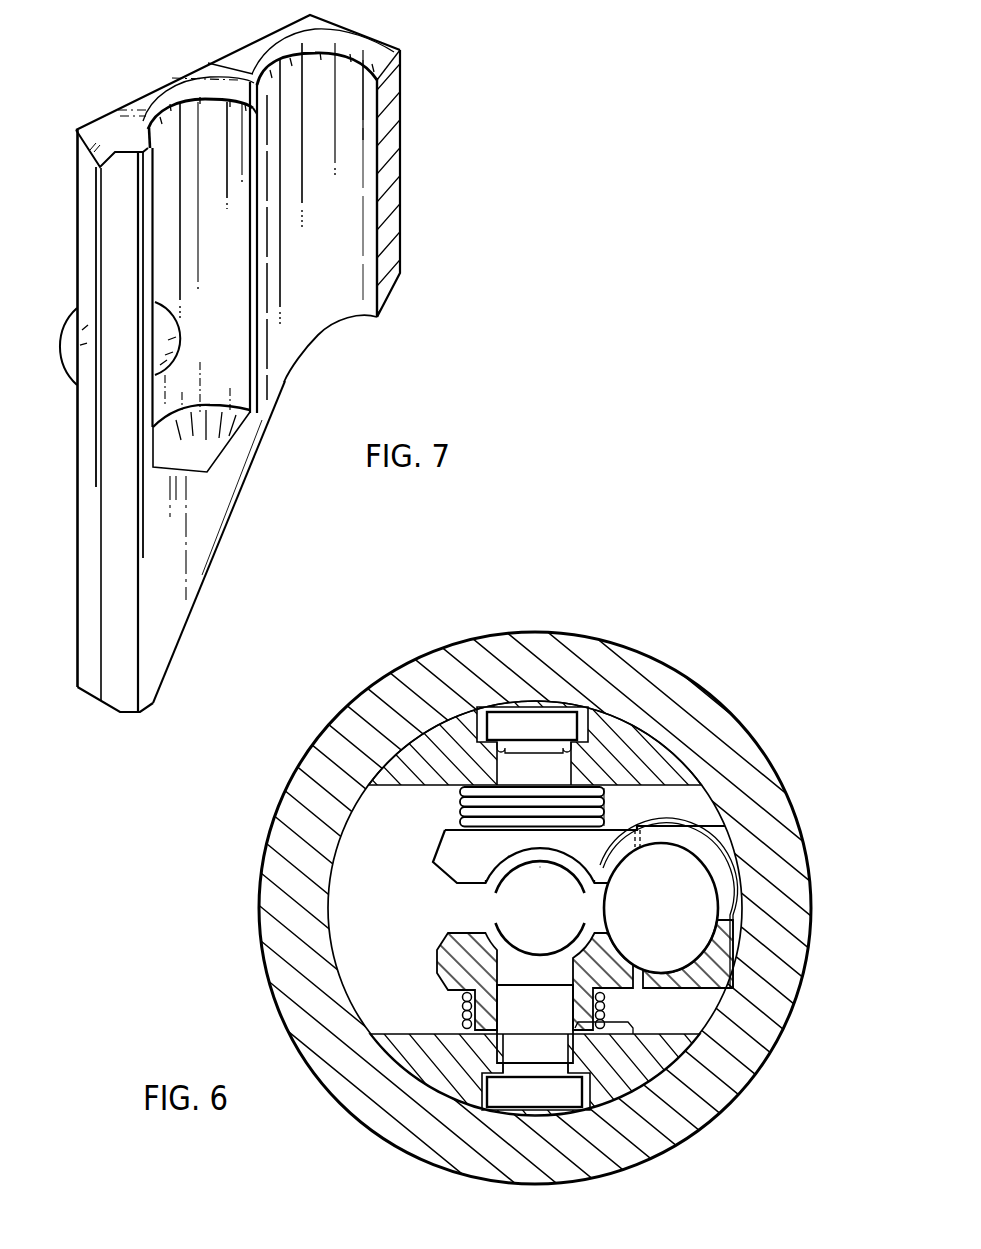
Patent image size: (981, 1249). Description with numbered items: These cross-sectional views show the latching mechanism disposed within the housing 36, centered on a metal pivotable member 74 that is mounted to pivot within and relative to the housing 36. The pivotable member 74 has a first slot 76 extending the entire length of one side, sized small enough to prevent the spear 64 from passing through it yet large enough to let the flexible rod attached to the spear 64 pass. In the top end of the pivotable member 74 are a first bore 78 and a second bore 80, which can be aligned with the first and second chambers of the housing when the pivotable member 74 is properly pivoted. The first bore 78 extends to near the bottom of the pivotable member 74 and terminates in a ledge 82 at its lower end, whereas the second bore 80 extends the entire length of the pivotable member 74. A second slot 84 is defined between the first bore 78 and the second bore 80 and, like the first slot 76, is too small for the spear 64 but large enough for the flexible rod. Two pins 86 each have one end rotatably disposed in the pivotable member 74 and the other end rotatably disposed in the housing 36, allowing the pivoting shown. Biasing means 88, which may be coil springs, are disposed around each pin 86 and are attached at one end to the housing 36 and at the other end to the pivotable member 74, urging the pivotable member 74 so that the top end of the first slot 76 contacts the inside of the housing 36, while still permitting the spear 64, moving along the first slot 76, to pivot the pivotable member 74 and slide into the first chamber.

In FIG. 6, the housing 36 is at (618, 733).
In FIG. 6, the spear 64 is at (544, 929).
In FIG. 7, the pivotable member 74 is at (386, 158).
In FIG. 6, the pivotable member 74 is at (446, 960).
In FIG. 7, the first slot 76 is at (120, 228).
In FIG. 6, the first slot 76 is at (436, 866).
In FIG. 7, the first bore 78 is at (170, 98).
In FIG. 6, the first bore 78 is at (490, 886).
In FIG. 7, the second bore 80 is at (358, 53).
In FIG. 6, the second bore 80 is at (668, 929).
In FIG. 7, the ledge 82 is at (213, 450).
In FIG. 6, the ledge 82 is at (560, 862).
In FIG. 7, the second slot 84 is at (264, 124).
In FIG. 6, the second slot 84 is at (603, 888).
In FIG. 6, the pins 86 is at (543, 785).
In FIG. 6, the biasing means 88 is at (603, 805).